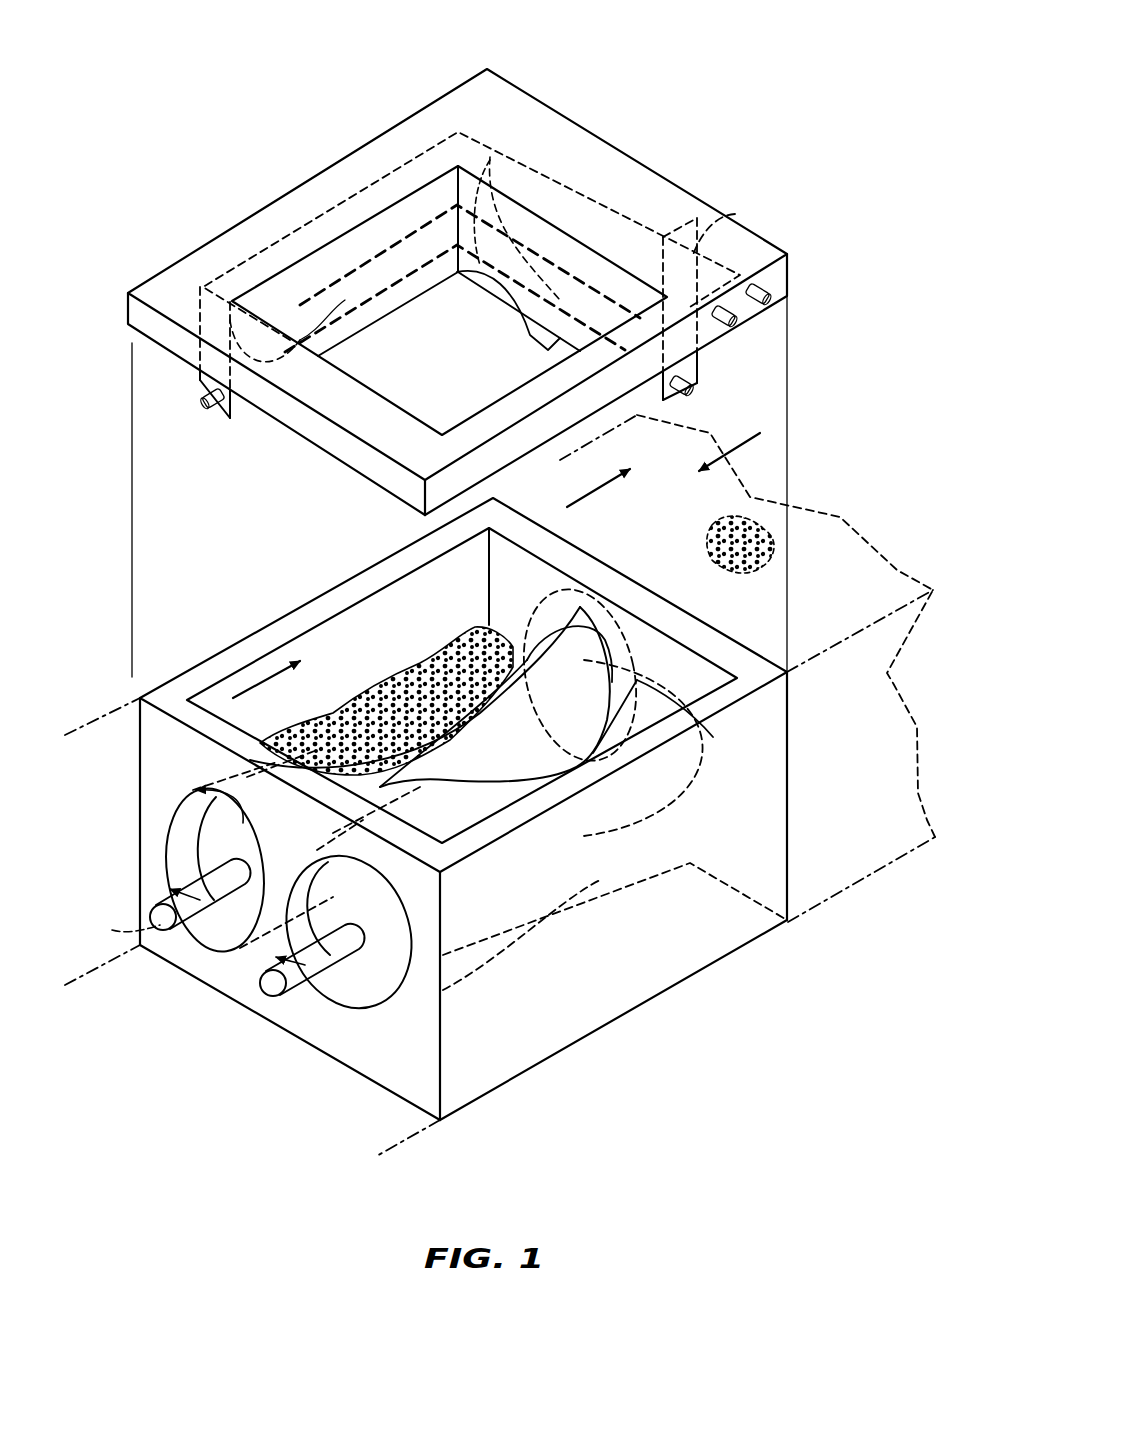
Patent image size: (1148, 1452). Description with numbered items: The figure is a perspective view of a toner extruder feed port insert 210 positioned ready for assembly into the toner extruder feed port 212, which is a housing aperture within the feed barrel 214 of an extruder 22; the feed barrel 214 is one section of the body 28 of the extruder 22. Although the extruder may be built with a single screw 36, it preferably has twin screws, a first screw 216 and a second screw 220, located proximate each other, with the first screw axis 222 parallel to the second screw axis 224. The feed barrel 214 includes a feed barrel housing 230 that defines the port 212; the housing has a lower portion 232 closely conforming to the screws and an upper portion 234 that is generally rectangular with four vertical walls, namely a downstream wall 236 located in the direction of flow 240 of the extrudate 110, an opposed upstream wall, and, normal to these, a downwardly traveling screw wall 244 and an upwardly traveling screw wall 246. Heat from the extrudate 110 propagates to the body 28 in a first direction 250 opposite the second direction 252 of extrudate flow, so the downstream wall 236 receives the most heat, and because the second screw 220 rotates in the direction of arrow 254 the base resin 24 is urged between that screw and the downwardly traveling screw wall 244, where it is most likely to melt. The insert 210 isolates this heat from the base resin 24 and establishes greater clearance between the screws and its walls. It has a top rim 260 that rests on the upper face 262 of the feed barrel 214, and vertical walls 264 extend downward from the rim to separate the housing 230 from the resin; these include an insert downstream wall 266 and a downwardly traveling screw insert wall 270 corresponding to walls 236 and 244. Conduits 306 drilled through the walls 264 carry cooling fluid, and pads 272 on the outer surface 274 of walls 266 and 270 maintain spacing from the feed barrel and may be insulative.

The toner extruder feed port insert 210 is at (420, 72).
The downwardly traveling screw insert wall 270 is at (325, 278).
The pads 272 is at (490, 158).
The insert downstream wall 266 is at (572, 268).
The top rim 260 is at (228, 228).
The conduits 306 is at (735, 214).
The vertical walls 264 is at (355, 325).
The outer surface 274 is at (200, 393).
The first direction 250 is at (747, 440).
The direction of flow 240 is at (590, 493).
The extruder 22 is at (890, 575).
The toner extruder feed port 212 is at (415, 598).
The downwardly traveling screw wall 244 is at (290, 612).
The base resin 24 is at (375, 693).
The downstream wall 236 is at (623, 572).
The extrudate 110 is at (780, 557).
The upper face 262 is at (744, 660).
The feed barrel 214 is at (175, 668).
The second direction 252 is at (253, 682).
The upwardly traveling screw wall 246 is at (770, 680).
The second screw 220 is at (196, 792).
The second screw axis 224 is at (112, 930).
The screw 36 is at (158, 930).
The arrow 254 is at (200, 937).
The first screw axis 222 is at (236, 1010).
The first screw 216 is at (387, 977).
The body 28 is at (497, 1078).
The feed barrel housing 230 is at (605, 1030).
The lower portion 232 is at (640, 958).
The upper portion 234 is at (632, 793).